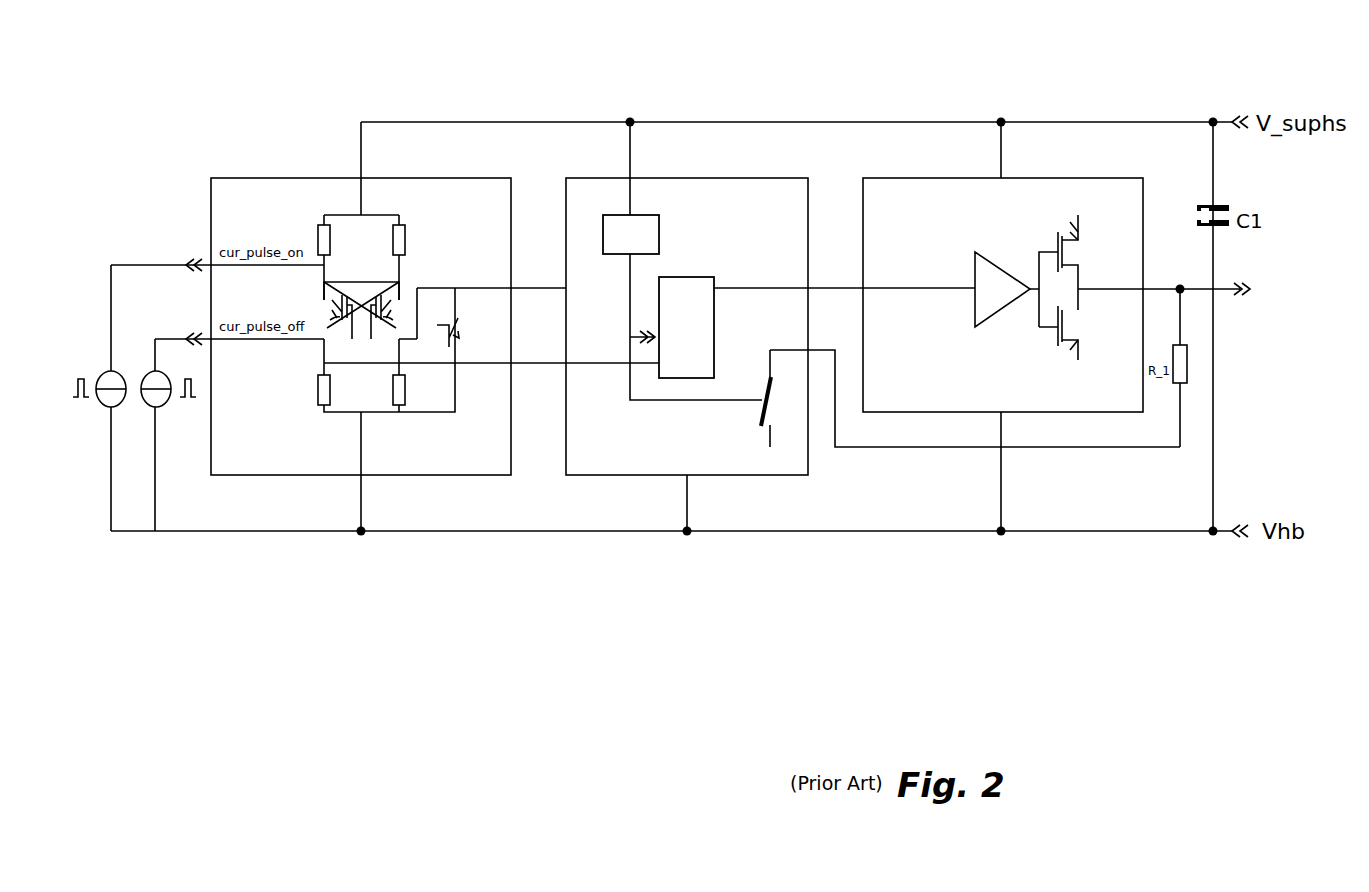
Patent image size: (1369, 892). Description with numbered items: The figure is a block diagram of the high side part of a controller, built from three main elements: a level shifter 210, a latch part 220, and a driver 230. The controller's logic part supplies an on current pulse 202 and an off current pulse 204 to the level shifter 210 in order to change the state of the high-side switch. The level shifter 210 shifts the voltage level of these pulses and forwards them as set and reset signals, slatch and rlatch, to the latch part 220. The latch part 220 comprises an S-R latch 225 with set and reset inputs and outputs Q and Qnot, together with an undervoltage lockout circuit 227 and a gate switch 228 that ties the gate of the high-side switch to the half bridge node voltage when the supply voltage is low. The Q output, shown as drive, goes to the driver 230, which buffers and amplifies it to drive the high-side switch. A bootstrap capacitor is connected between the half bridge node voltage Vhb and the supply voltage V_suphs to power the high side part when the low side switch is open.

The on current pulse 202 is at (100, 407).
The off current pulse 204 is at (168, 410).
The level shifter 210 is at (388, 354).
The latch part 220 is at (873, 326).
The S-R latch 225 is at (686, 327).
The undervoltage lockout circuit 227 is at (659, 231).
The gate switch 228 is at (774, 401).
The driver 230 is at (1056, 326).